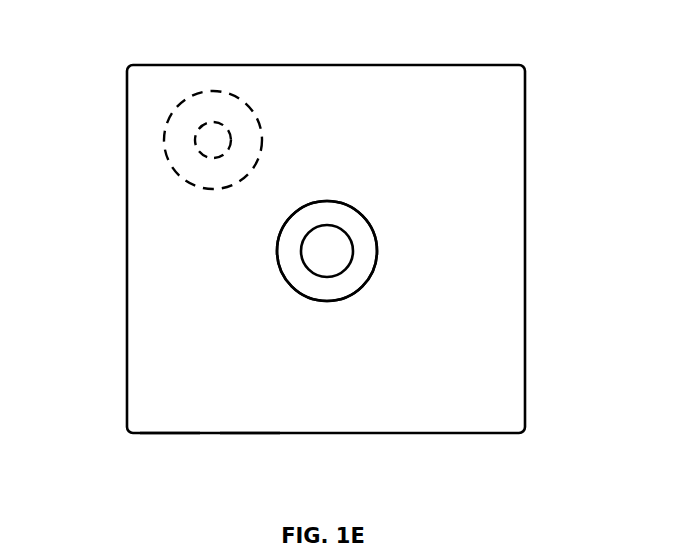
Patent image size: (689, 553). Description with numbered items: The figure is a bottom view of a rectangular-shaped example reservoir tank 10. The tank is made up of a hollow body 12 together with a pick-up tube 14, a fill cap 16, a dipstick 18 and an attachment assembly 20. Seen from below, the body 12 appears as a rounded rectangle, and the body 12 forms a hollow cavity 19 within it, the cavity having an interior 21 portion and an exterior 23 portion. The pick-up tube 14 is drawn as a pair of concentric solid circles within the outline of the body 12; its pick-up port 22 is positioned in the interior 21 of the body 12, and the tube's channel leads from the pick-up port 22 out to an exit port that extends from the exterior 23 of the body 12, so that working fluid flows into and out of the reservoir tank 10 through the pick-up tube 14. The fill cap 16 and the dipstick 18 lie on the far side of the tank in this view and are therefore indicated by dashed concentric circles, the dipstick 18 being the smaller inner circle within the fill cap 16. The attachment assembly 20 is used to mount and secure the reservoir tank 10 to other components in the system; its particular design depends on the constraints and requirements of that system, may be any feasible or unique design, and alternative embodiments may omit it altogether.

The reservoir tank 10 is at (325, 249).
The hollow body 12 is at (114, 243).
The pick-up tube 14 is at (364, 260).
The fill cap 16 is at (165, 133).
The dipstick 18 is at (217, 83).
The hollow cavity 19 is at (149, 310).
The attachment assembly 20 is at (290, 285).
The interior portion 21 is at (247, 429).
The pick-up port 22 is at (333, 241).
The exterior portion 23 is at (168, 447).